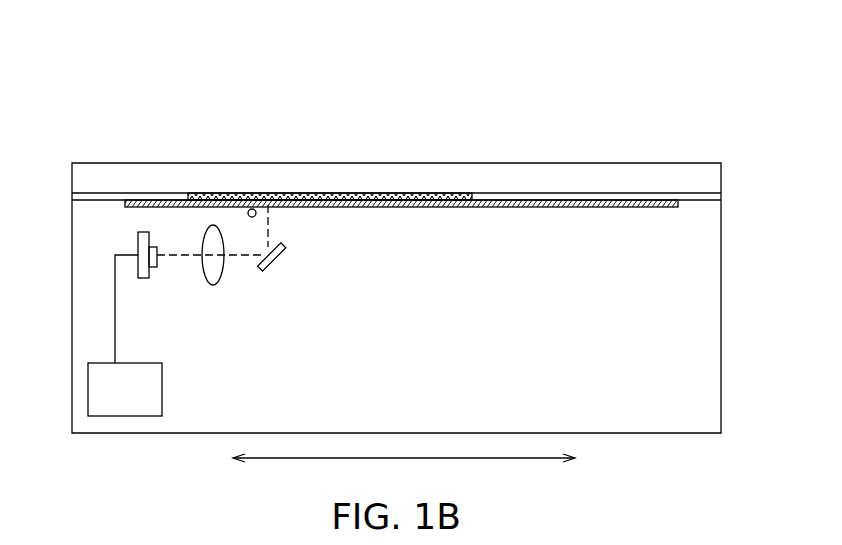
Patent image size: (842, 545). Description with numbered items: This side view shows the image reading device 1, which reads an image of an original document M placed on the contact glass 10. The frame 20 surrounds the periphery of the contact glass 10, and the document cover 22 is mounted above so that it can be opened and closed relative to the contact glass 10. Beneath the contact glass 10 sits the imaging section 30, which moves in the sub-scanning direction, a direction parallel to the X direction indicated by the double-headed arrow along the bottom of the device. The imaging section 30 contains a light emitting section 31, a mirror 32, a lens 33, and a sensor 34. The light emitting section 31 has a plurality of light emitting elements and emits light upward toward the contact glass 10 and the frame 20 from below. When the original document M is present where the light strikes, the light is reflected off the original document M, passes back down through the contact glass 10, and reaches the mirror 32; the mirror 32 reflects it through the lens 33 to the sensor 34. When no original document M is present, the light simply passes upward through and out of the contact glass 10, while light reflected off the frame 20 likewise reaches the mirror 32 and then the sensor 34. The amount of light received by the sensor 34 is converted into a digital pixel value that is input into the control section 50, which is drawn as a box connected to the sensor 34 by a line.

The image reading device 1 is at (271, 79).
The contact glass 10 is at (633, 195).
The frame 20 is at (712, 194).
The document cover 22 is at (580, 163).
The original document M is at (453, 200).
The imaging section 30 is at (302, 121).
The light emitting section 31 is at (251, 209).
The mirror 32 is at (283, 246).
The lens 33 is at (211, 226).
The sensor 34 is at (142, 232).
The control section 50 is at (162, 385).
The X direction X is at (404, 473).